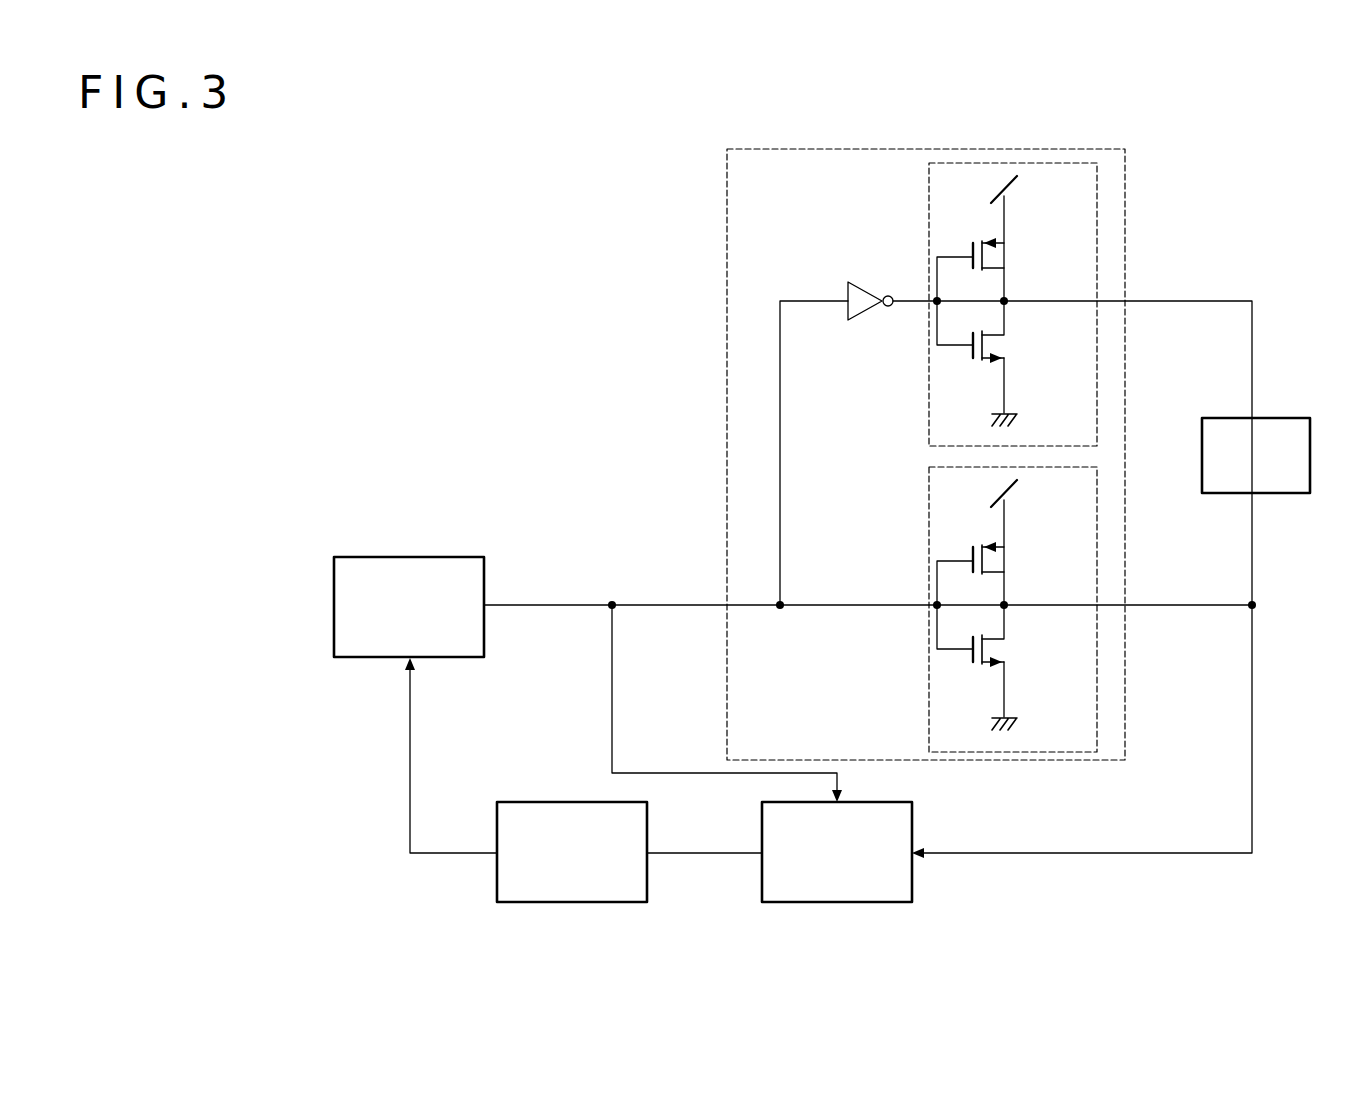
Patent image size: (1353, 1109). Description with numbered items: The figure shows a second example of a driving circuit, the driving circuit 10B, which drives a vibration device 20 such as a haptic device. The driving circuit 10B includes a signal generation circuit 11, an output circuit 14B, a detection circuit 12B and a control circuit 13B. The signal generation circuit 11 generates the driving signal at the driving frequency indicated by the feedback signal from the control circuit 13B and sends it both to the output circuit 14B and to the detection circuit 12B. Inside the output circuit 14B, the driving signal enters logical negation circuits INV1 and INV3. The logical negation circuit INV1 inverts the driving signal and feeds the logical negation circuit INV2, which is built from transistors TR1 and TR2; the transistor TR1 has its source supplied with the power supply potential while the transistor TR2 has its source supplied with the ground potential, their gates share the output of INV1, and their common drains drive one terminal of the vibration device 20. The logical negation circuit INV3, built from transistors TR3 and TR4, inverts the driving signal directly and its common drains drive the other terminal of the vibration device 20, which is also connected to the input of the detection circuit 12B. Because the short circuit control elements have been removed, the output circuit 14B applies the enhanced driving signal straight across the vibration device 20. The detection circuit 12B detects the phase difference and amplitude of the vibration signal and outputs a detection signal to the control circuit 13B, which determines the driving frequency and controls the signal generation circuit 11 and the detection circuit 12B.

The driving circuit 10B is at (1232, 252).
The signal generation circuit 11 is at (402, 557).
The detection circuit 12B is at (823, 903).
The control circuit 13B is at (570, 903).
The output circuit 14B is at (1125, 207).
The vibration device 20 is at (1227, 418).
The logical negation circuit INV1 is at (867, 288).
The logical negation circuit INV2 is at (928, 368).
The logical negation circuit INV3 is at (927, 550).
The transistor TR1 is at (1005, 253).
The transistor TR2 is at (1005, 350).
The transistor TR3 is at (1005, 559).
The transistor TR4 is at (1005, 654).